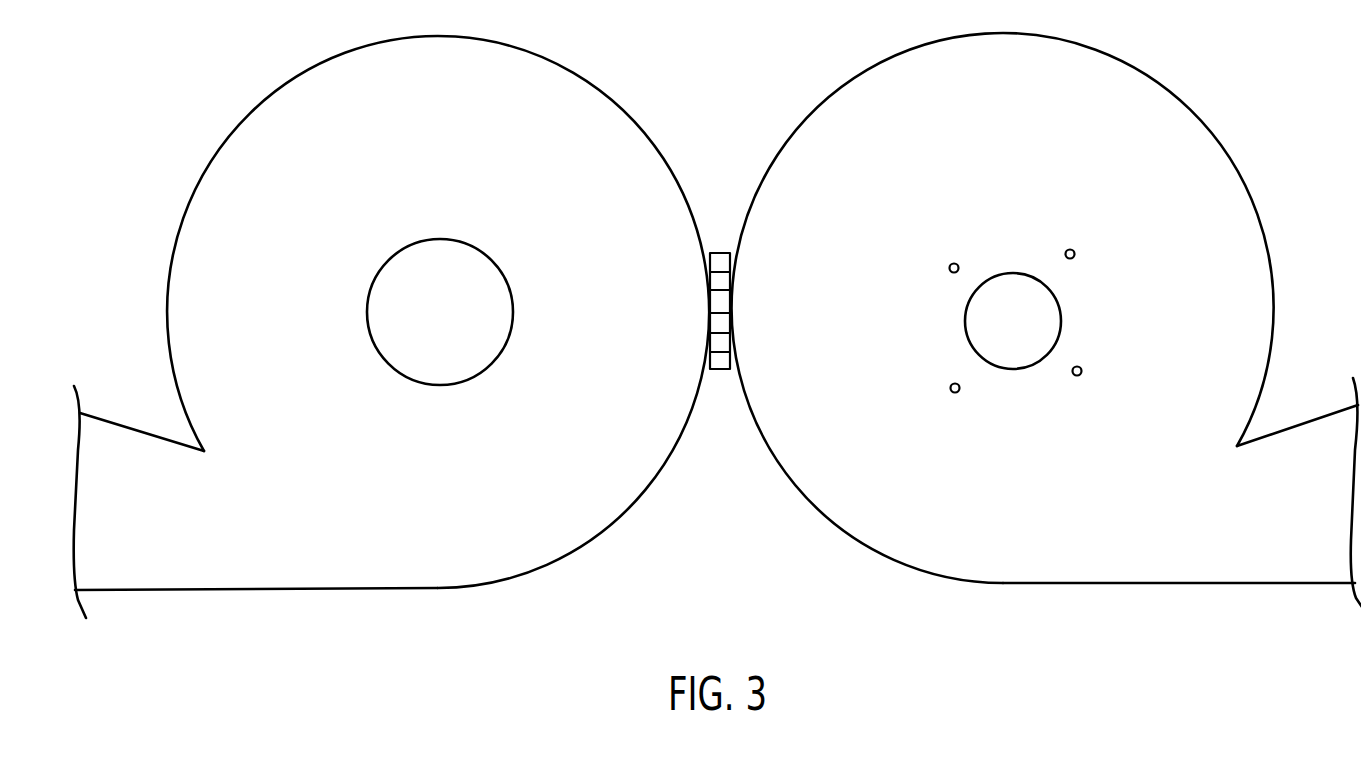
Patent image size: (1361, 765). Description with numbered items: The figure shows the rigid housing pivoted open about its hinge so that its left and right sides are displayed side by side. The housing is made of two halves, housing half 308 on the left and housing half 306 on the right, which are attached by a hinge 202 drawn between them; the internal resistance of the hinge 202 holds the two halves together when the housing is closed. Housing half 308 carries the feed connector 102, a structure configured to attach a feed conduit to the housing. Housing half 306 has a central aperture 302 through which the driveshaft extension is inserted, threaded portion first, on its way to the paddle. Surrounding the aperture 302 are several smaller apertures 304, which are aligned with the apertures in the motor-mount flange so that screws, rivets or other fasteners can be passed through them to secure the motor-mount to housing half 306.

The feed connector 102 is at (484, 250).
The hinge 202 is at (718, 253).
The aperture 302 is at (1020, 274).
The apertures 304 is at (953, 383).
The housing half 306 is at (1008, 97).
The housing half 308 is at (402, 105).